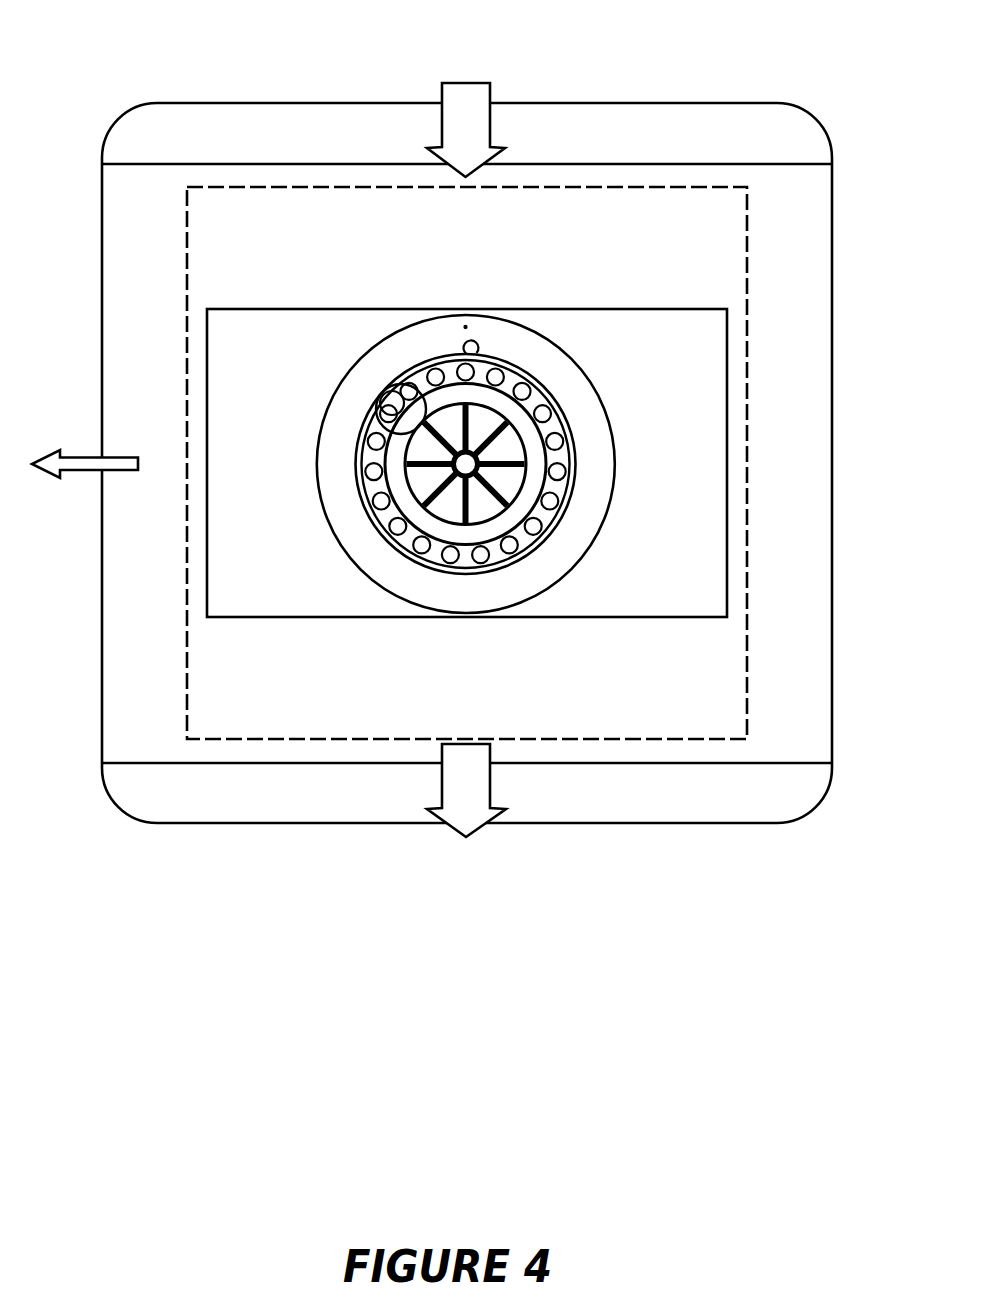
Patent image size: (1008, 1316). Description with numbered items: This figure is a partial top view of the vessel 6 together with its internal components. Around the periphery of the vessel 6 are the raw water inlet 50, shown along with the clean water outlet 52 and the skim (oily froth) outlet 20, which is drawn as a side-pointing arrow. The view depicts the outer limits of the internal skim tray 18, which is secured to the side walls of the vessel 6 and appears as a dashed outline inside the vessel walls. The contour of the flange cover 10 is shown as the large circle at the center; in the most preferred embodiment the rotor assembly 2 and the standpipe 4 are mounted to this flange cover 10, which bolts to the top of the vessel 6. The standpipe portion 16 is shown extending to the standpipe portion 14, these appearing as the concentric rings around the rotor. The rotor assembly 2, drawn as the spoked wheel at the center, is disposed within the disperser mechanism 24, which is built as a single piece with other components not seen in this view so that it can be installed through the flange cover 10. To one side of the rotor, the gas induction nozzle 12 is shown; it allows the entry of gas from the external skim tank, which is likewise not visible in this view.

The rotor assembly 2 is at (650, 479).
The standpipe 4 is at (625, 464).
The vessel 6 is at (772, 103).
The flange cover 10 is at (598, 388).
The gas induction nozzle 12 is at (381, 388).
The standpipe portion 14 is at (576, 468).
The standpipe portion 16 is at (527, 448).
The internal skim tray 18 is at (747, 268).
The skim outlet 20 is at (90, 456).
The disperser mechanism 24 is at (563, 478).
The raw water inlet 50 is at (443, 83).
The clean water outlet 52 is at (473, 833).